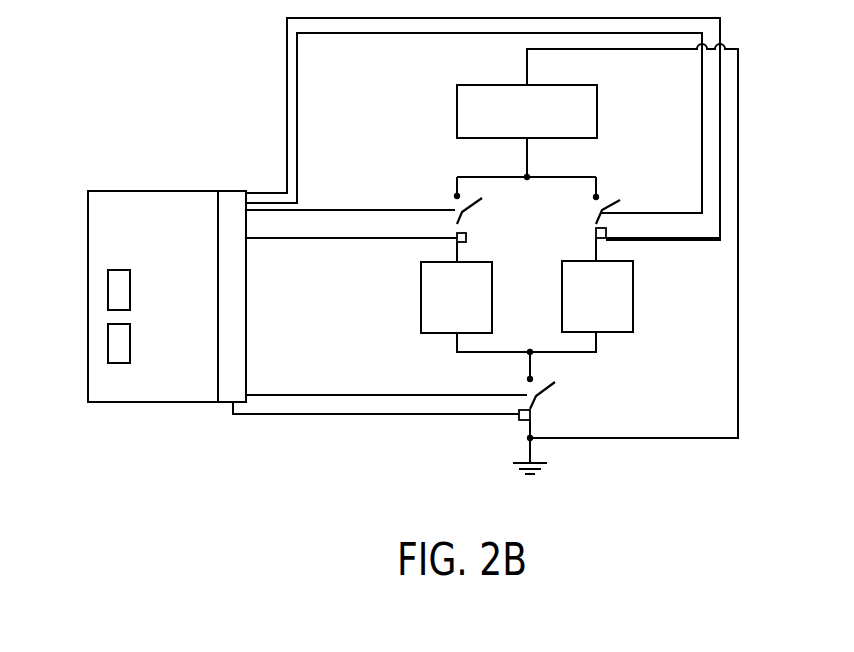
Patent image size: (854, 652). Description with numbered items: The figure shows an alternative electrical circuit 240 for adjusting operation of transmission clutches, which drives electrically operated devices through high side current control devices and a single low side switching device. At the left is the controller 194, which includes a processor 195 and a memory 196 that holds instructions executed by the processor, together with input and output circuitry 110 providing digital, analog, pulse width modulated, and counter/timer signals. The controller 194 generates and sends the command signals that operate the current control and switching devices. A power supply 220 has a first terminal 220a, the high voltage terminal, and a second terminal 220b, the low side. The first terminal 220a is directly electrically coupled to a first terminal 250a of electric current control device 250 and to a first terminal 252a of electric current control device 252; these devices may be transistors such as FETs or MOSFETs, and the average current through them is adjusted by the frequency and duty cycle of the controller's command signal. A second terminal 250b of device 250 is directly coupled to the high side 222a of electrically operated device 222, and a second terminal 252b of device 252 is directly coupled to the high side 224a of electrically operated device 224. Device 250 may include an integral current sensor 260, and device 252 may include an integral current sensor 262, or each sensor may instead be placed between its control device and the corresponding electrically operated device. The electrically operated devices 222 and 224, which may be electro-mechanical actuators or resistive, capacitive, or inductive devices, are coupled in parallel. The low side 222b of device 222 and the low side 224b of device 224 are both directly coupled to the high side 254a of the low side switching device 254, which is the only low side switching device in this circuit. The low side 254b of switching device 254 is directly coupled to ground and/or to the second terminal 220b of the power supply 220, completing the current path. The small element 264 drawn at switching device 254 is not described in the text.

The electrical circuit 240 is at (108, 93).
The input and output circuitry 110 is at (233, 198).
The memory 196 is at (117, 288).
The processor 195 is at (115, 342).
The controller 194 is at (115, 393).
The power supply 220 is at (527, 111).
The first terminal 220a is at (531, 140).
The second terminal 220b is at (529, 75).
The electric current control device 250 is at (486, 211).
The first terminal 250a is at (456, 197).
The second terminal 250b is at (457, 231).
The current sensor 260 is at (467, 237).
The electric current control device 252 is at (640, 203).
The first terminal 252a is at (595, 198).
The second terminal 252b is at (596, 247).
The current sensor 262 is at (607, 234).
The electrically operated device 222 is at (456, 297).
The high side 222a is at (440, 261).
The low side 222b is at (455, 330).
The electrically operated device 224 is at (597, 296).
The high side 224a is at (600, 262).
The low side 224b is at (600, 330).
The low side switching device 254 is at (574, 393).
The high side 254a is at (528, 380).
The low side 254b is at (530, 424).
The third switch actuator 264 is at (532, 416).